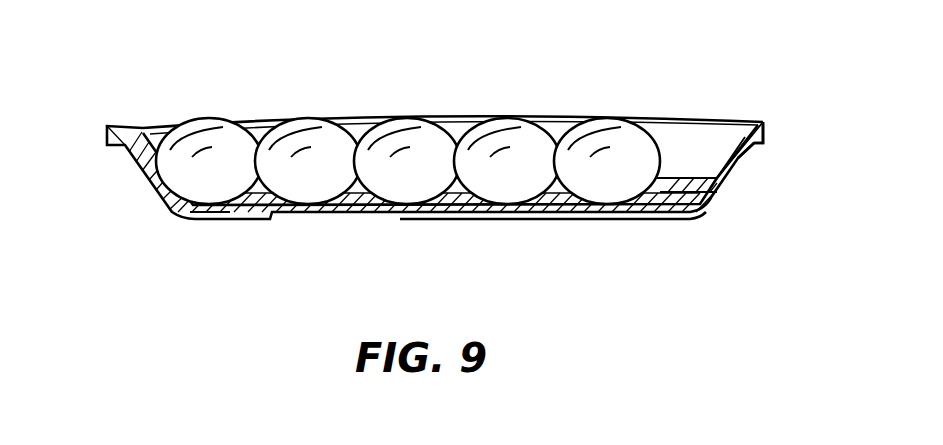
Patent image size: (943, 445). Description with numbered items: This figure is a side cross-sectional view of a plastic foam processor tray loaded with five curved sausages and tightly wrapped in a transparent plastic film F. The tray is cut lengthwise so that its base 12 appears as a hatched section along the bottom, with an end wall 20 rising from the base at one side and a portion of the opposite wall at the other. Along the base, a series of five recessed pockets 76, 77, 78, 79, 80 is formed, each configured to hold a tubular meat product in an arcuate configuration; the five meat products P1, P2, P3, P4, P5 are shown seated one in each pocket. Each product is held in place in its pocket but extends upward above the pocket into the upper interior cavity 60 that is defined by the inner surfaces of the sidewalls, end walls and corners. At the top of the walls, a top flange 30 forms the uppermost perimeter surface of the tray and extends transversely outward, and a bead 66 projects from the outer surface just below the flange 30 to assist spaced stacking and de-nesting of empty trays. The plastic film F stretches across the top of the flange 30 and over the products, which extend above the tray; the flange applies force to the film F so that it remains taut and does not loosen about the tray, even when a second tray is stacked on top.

The end wall 20 is at (150, 146).
The plastic film wrap F is at (700, 115).
The upper interior cavity 60 is at (706, 140).
The top flange 30 is at (763, 124).
The bead 66 is at (748, 150).
The base 12 is at (654, 219).
The tubular meat product P5 is at (240, 124).
The tubular meat product P4 is at (348, 122).
The tubular meat product P3 is at (455, 122).
The tubular meat product P2 is at (552, 122).
The tubular meat product P1 is at (645, 121).
The recessed pocket 80 is at (205, 212).
The recessed pocket 79 is at (298, 212).
The recessed pocket 78 is at (400, 212).
The recessed pocket 77 is at (502, 212).
The recessed pocket 76 is at (602, 212).